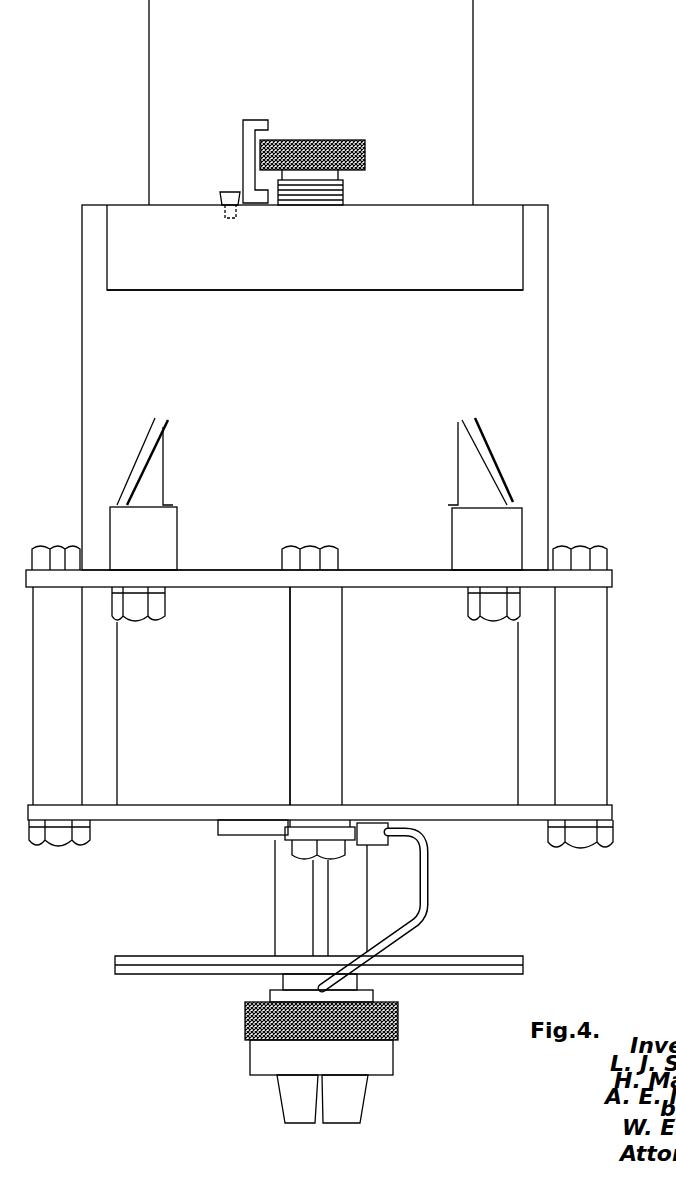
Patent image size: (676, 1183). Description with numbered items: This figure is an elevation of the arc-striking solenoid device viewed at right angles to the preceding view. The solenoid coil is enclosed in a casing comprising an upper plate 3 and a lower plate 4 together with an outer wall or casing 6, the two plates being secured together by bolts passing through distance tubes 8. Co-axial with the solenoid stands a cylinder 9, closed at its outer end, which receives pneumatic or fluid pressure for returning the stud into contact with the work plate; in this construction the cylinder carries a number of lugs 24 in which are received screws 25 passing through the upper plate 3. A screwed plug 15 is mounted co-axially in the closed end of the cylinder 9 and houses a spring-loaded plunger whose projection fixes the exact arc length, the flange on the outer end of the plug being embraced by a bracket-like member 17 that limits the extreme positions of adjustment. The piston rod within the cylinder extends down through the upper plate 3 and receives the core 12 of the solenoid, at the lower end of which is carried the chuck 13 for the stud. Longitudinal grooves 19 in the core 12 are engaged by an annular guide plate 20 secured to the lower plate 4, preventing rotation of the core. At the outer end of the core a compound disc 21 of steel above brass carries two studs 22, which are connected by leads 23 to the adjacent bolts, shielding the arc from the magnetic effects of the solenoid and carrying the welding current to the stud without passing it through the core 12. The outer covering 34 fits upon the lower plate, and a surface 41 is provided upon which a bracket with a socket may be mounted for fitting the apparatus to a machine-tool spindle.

The outer covering 34 is at (428, 47).
The cylinder 9 is at (315, 387).
The surface 41 is at (460, 250).
The screwed plug 15 is at (298, 148).
The bracket-like member 17 is at (248, 156).
The lugs 24 is at (143, 543).
The upper plate 3 is at (77, 577).
The distance tubes 8 is at (65, 642).
The screws 25 is at (133, 607).
The outer wall or casing 6 is at (256, 696).
The lower plate 4 is at (43, 813).
The annular guide plate 20 is at (228, 825).
The longitudinal grooves 19 is at (317, 878).
The core 12 is at (300, 916).
The leads 23 is at (420, 905).
The compound disc 21 is at (450, 962).
The studs 22 is at (297, 1000).
The chuck 13 is at (377, 1018).